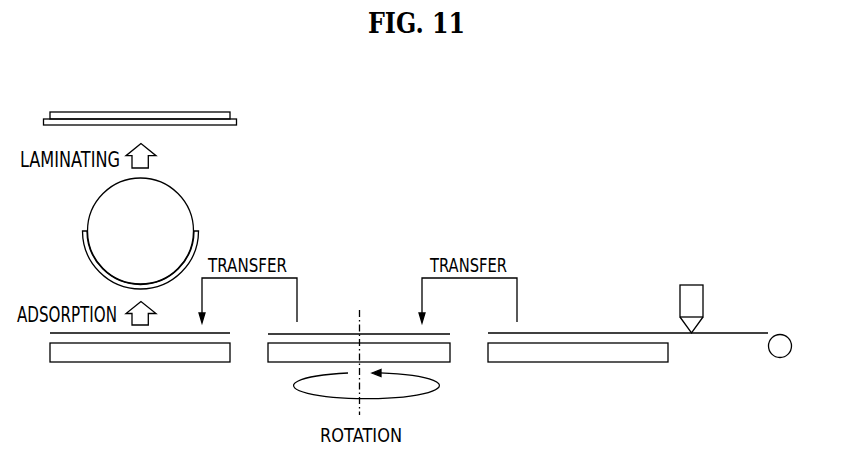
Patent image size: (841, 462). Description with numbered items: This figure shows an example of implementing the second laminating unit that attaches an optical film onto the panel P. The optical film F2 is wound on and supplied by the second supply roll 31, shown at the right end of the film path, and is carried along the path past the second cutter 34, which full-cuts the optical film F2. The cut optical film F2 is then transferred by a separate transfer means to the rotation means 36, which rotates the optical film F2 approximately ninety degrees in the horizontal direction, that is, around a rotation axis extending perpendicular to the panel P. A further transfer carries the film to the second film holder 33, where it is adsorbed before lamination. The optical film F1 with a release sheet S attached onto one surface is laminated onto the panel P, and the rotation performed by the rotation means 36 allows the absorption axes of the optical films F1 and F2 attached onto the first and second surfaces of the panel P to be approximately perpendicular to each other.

The optical film F1 is at (215, 112).
The panel P is at (237, 122).
The optical film F2 is at (82, 241).
The release sheet S is at (180, 333).
The second film holder 33 is at (209, 363).
The rotation means 36 is at (443, 363).
The second cutter 34 is at (704, 295).
The second supply roll 31 is at (792, 343).